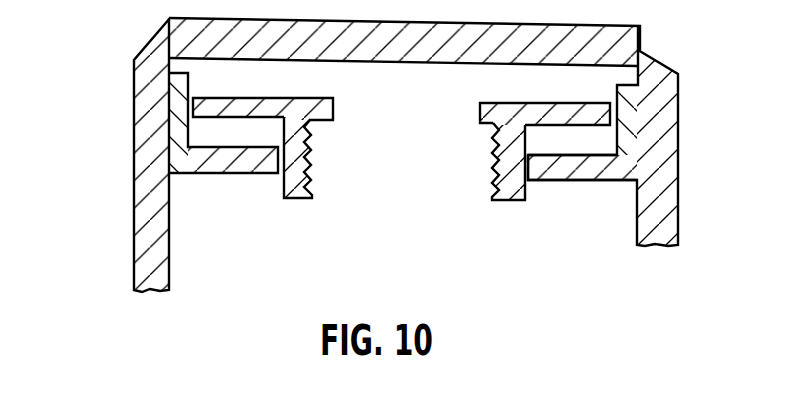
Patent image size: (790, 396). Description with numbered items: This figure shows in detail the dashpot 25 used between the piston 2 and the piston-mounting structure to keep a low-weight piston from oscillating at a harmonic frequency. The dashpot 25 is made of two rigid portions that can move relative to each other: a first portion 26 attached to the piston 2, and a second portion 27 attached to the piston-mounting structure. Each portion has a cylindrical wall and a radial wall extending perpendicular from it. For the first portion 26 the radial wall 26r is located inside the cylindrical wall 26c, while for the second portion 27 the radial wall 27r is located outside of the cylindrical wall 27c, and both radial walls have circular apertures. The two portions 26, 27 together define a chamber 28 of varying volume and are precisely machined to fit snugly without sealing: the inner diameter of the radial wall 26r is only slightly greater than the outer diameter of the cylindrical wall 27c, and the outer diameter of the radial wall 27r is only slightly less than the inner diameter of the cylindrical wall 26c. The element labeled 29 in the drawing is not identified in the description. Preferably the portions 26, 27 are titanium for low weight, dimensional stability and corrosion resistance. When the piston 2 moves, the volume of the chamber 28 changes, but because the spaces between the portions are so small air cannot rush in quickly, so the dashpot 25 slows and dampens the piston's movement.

The piston 2 is at (435, 53).
The dashpot 25 is at (386, 155).
The first portion 26 is at (296, 159).
The cylindrical wall 26c is at (637, 132).
The radial wall 26r is at (550, 182).
The second portion 27 is at (335, 107).
The radial wall 27r is at (557, 103).
The cylindrical wall 27c is at (495, 188).
The chamber 28 is at (213, 130).
The side wall 29 is at (140, 250).